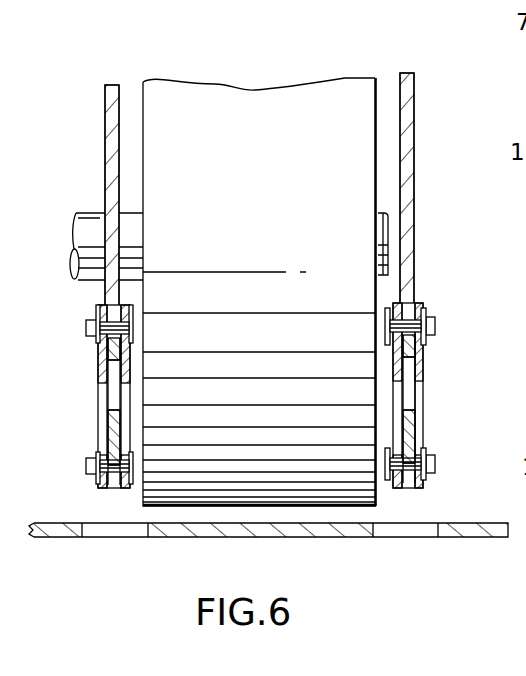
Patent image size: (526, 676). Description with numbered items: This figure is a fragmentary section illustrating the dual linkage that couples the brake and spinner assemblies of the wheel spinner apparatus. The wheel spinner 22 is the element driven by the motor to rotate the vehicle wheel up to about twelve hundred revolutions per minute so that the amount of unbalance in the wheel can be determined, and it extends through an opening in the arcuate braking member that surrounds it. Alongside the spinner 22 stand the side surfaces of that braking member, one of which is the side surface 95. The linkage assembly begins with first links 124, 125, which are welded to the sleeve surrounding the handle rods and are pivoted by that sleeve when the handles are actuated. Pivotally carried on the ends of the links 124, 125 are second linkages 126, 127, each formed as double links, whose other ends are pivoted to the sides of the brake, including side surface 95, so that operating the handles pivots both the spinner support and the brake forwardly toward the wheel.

The wheel spinner 22 is at (230, 105).
The side surface 95 is at (113, 162).
The link 124 is at (112, 434).
The link 125 is at (414, 428).
The second linkage 126 is at (101, 368).
The second linkage 127 is at (422, 358).